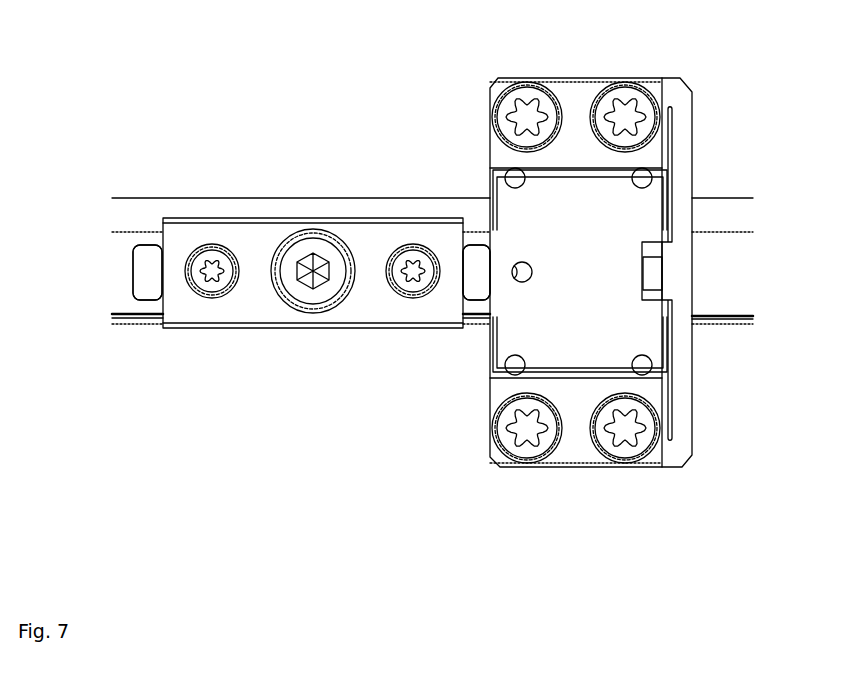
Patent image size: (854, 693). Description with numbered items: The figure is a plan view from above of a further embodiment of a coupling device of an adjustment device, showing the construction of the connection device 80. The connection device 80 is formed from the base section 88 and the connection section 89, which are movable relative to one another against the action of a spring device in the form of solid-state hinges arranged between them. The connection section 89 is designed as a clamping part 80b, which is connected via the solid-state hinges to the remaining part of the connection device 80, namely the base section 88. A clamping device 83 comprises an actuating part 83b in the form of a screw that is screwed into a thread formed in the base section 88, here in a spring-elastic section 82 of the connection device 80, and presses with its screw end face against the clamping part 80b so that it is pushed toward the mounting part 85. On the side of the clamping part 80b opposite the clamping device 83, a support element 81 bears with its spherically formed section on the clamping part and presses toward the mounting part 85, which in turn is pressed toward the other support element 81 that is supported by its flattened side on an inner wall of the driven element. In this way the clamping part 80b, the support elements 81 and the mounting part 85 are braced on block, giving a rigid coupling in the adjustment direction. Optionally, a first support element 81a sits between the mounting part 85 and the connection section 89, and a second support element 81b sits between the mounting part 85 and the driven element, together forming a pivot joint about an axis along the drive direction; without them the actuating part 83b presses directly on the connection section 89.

The connection device 80 is at (601, 239).
The clamping part 80b is at (518, 338).
The support element 81 is at (150, 245).
The first support element 81a is at (485, 260).
The second support element 81b is at (142, 265).
The spring-elastic section 82 is at (692, 248).
The clamping device 83 is at (726, 274).
The actuating part 83b is at (652, 288).
The mounting part 85 is at (358, 238).
The base section 88 is at (652, 389).
The connection section 89 is at (508, 350).